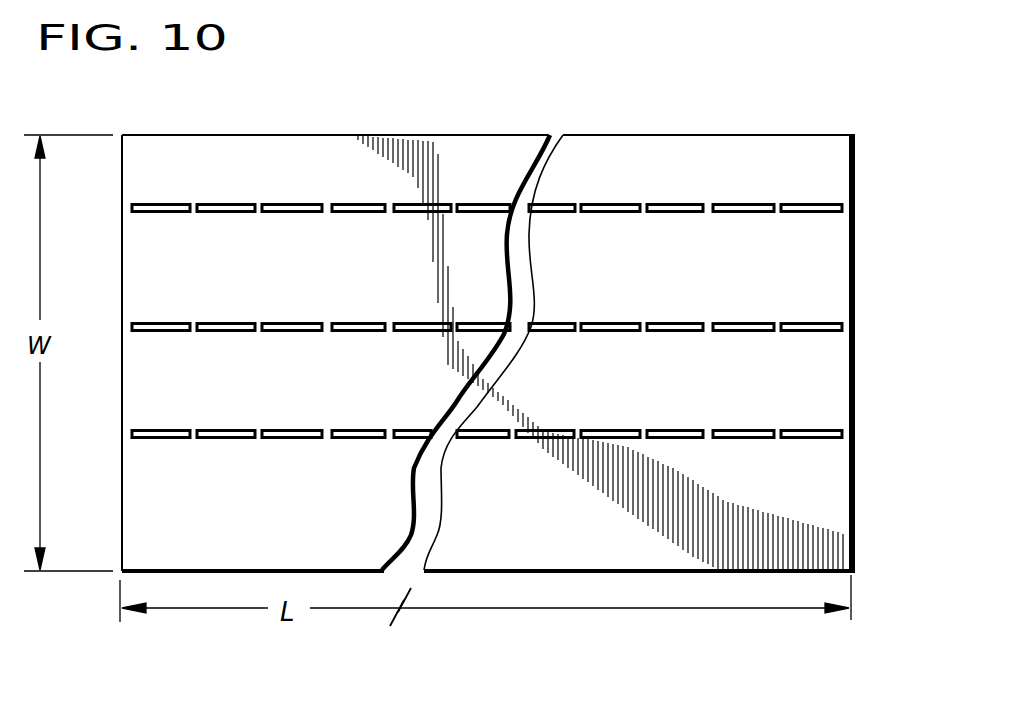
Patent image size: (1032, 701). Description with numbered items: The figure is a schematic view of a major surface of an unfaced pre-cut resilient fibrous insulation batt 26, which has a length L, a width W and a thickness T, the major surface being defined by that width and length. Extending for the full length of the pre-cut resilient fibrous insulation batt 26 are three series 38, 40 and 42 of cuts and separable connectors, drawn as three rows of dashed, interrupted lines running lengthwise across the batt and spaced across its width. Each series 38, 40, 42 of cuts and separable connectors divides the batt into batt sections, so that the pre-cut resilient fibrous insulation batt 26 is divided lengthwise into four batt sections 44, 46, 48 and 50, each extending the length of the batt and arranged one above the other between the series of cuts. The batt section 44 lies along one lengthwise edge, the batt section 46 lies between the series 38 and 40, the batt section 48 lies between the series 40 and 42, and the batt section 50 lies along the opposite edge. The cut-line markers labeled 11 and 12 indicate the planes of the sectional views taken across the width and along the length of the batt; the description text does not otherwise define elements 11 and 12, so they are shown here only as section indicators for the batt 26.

The pre-cut resilient fibrous insulation batt 26 is at (432, 88).
The series of cuts and separable connectors 38 is at (807, 421).
The series of cuts and separable connectors 40 is at (766, 312).
The series of cuts and separable connectors 42 is at (696, 198).
The batt section 44 is at (287, 515).
The batt section 46 is at (286, 395).
The batt section 48 is at (285, 276).
The batt section 50 is at (296, 177).
The section line 11- 11 is at (113, 434).
The section line 12- 12 is at (612, 98).